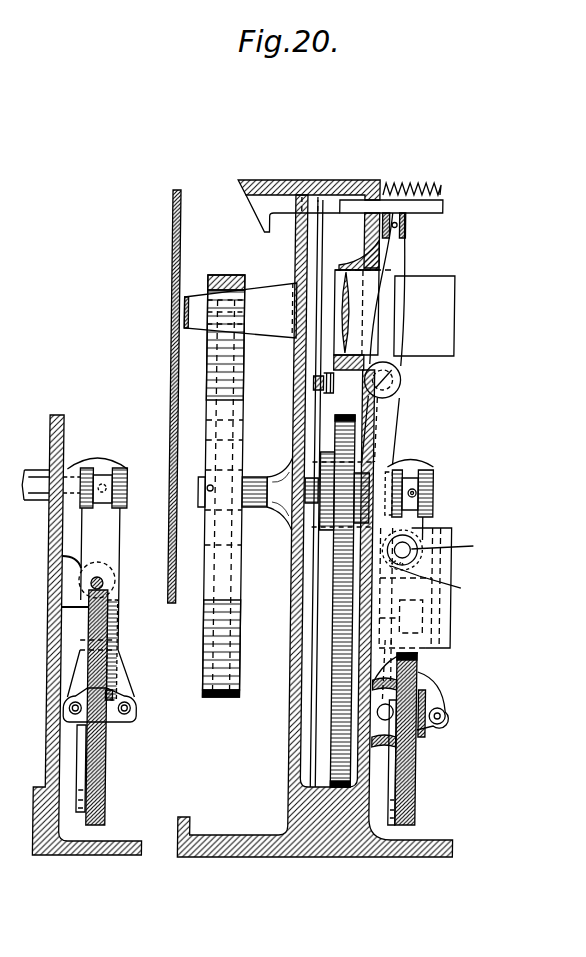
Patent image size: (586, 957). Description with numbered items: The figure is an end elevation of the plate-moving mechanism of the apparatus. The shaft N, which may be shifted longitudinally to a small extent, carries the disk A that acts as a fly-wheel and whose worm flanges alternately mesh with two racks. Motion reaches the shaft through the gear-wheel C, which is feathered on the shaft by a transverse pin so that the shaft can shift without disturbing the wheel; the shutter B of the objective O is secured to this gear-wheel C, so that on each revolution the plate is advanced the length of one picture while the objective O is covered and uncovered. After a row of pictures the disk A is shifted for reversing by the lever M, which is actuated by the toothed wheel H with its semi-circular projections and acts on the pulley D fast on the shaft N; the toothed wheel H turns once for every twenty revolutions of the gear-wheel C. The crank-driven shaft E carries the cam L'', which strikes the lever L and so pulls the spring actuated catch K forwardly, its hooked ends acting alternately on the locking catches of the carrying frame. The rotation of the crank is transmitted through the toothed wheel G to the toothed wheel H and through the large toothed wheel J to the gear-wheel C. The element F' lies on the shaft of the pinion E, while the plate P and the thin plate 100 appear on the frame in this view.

The disk A is at (207, 366).
The shutter B is at (319, 232).
The gear-wheel C is at (330, 457).
The pulley D is at (120, 467).
The shaft E is at (402, 550).
The pinion shaft F' is at (450, 549).
The toothed wheel G is at (452, 638).
The toothed wheel H is at (105, 770).
The large toothed wheel J is at (347, 418).
The spring actuated catch K is at (436, 218).
The lever L is at (389, 339).
The cam L'' is at (436, 581).
The lever M is at (120, 542).
The shaft N is at (253, 480).
The objective O is at (440, 318).
The plate P is at (263, 293).
The plate 100 is at (171, 342).